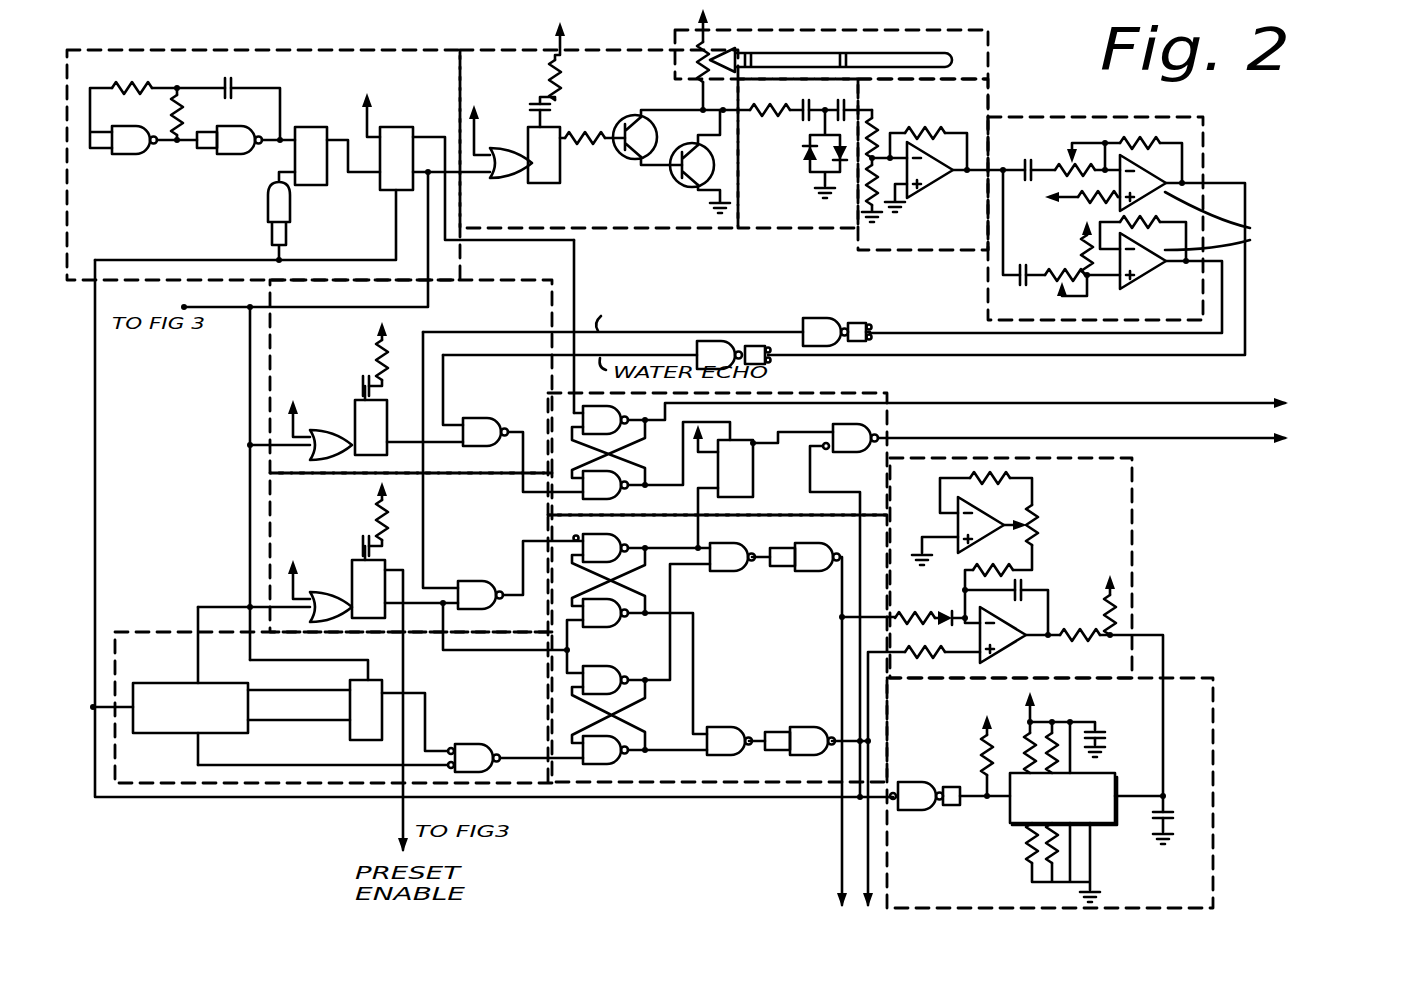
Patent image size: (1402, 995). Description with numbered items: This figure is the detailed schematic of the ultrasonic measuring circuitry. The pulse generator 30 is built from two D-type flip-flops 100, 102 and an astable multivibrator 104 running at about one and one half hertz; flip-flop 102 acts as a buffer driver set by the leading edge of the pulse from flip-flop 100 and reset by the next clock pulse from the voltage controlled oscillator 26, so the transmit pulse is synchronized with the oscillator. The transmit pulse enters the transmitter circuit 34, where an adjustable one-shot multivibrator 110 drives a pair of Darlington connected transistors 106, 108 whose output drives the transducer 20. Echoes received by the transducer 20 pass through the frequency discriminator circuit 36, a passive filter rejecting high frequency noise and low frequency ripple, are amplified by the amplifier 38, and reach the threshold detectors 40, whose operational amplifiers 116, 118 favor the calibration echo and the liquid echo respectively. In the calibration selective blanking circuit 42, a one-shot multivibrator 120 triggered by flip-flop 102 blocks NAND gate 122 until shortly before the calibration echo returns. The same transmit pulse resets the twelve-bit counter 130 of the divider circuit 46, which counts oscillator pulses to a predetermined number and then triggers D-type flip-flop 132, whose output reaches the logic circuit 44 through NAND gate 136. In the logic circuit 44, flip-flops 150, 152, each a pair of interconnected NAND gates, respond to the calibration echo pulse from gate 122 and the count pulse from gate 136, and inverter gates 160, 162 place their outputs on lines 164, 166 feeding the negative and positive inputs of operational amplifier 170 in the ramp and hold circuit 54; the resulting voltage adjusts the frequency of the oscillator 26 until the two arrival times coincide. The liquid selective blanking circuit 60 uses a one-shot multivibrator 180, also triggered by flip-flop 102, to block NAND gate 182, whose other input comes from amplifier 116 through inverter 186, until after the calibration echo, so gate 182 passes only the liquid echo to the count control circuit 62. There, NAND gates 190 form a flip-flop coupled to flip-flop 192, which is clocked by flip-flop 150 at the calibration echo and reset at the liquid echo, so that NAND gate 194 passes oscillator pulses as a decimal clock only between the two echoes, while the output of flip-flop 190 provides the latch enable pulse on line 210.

The transducer 20 is at (828, 48).
The voltage controlled oscillator 26 is at (1215, 770).
The pulse generator 30 is at (348, 36).
The transmitter circuit 34 is at (655, 230).
The frequency discriminator circuit 36 is at (770, 232).
The amplifier 38 is at (922, 240).
The threshold detectors 40 is at (1100, 128).
The calibration selective blanking circuit 42 is at (275, 528).
The logic circuit 44 is at (720, 778).
The divider circuit 46 is at (183, 775).
The ramp and hold circuit 54 is at (1120, 535).
The liquid selective blanking circuit 60 is at (275, 373).
The count control circuit 62 is at (888, 400).
The D-type flip-flop 100 is at (323, 187).
The D-type flip-flop 102 is at (397, 134).
The astable multivibrator 104 is at (175, 148).
The transistor 106 is at (617, 130).
The transistor 108 is at (668, 175).
The adjustable one-shot multivibrator 110 is at (522, 172).
The operational amplifier 116 is at (1157, 183).
The operational amplifier 118 is at (1150, 270).
The one-shot multivibrator 120 is at (352, 600).
The NAND gate 122 is at (495, 582).
The 12-bit counter 130 is at (183, 684).
The D-type flip-flop 132 is at (352, 745).
The NAND gate 136 is at (468, 748).
The flip-flop 150 is at (620, 537).
The flip-flop 152 is at (637, 742).
The inverter gate 160 is at (818, 575).
The inverter gate 162 is at (805, 728).
The line 164 is at (843, 615).
The line 166 is at (883, 745).
The operational amplifier 170 is at (1012, 643).
The one-shot multivibrator 180 is at (388, 448).
The NAND gate 182 is at (506, 425).
The inverter 186 is at (812, 320).
The NAND gates 190 is at (580, 398).
The flip-flop 192 is at (756, 441).
The NAND gate 194 is at (880, 441).
The line 210 is at (1065, 406).